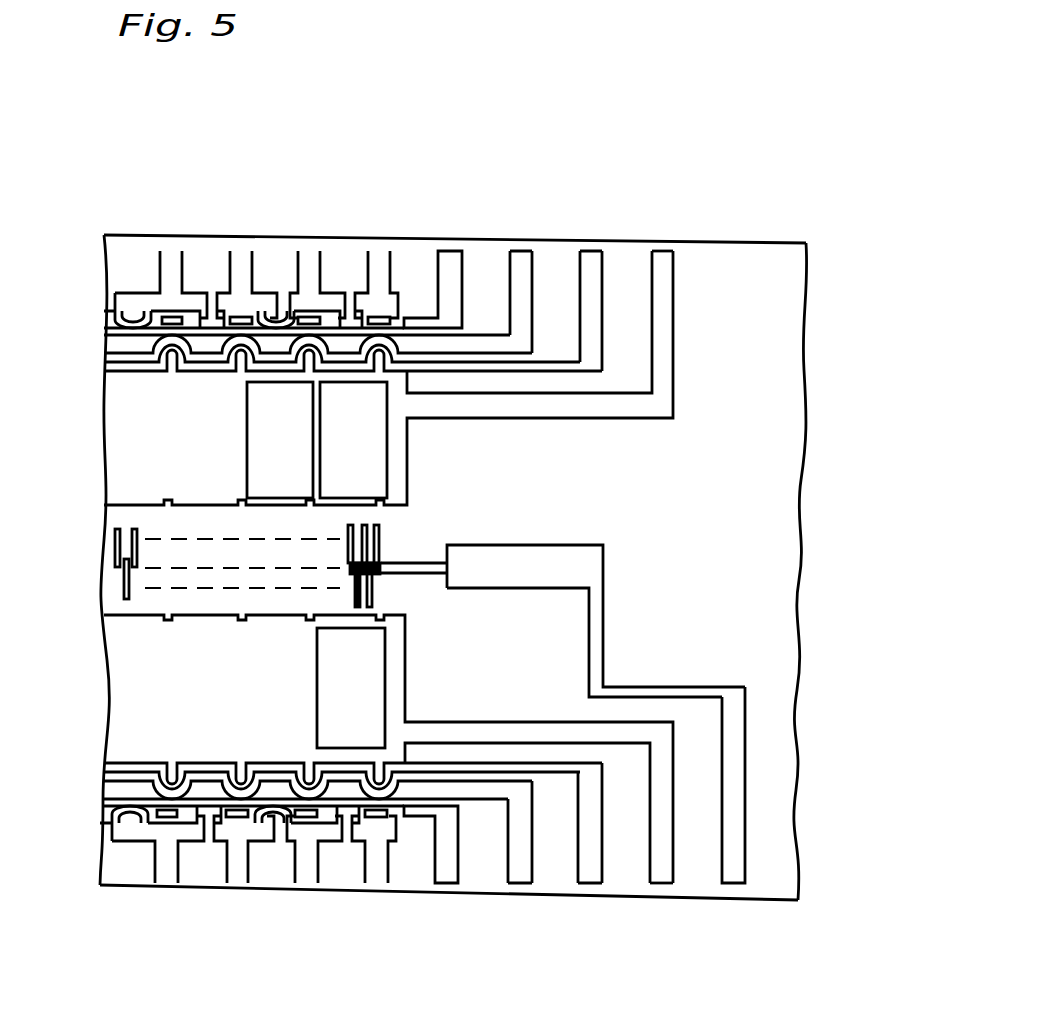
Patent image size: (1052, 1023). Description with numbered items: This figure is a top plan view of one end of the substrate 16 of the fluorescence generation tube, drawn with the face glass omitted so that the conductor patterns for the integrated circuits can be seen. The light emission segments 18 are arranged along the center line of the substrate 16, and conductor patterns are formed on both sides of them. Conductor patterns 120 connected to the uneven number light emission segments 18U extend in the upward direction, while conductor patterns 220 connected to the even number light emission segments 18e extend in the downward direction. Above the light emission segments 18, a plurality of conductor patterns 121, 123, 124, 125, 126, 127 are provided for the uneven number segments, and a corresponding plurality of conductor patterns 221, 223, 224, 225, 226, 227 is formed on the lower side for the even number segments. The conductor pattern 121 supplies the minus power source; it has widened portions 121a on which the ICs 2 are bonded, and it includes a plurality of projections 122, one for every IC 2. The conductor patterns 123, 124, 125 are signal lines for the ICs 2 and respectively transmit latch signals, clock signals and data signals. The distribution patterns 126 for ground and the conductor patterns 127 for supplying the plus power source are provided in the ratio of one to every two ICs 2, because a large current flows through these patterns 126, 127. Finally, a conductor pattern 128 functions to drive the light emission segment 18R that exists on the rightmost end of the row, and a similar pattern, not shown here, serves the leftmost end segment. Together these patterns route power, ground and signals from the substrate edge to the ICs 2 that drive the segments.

The substrate 16 is at (738, 268).
The conductor pattern for supplying the minus power source 121 is at (655, 276).
The widened portion 121a is at (140, 433).
The projection 122 is at (152, 366).
The conductor pattern for latch signals 123 is at (582, 262).
The conductor pattern for clock signals 124 is at (512, 262).
The conductor pattern for data signals 125 is at (442, 262).
The distribution pattern for GND 126 is at (228, 262).
The conductor pattern for supplying a plus power source 127 is at (157, 262).
The conductor pattern 128 is at (733, 880).
The IC 2 is at (258, 448).
The light emission segment 18 is at (116, 560).
The conductor pattern 120 is at (350, 523).
The uneven number light emission segment 18U is at (356, 562).
The rightmost end light emission segment 18R is at (420, 565).
The conductor pattern 220 is at (356, 592).
The even number light emission segment 18e is at (357, 572).
The conductor pattern 221 is at (657, 876).
The conductor pattern 223 is at (590, 875).
The conductor pattern 224 is at (520, 875).
The conductor pattern 225 is at (447, 875).
The conductor pattern 226 is at (242, 858).
The conductor pattern 227 is at (170, 858).